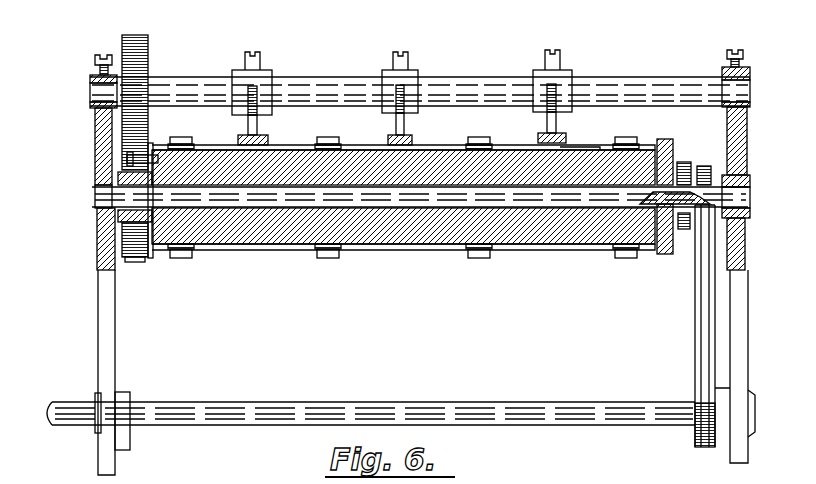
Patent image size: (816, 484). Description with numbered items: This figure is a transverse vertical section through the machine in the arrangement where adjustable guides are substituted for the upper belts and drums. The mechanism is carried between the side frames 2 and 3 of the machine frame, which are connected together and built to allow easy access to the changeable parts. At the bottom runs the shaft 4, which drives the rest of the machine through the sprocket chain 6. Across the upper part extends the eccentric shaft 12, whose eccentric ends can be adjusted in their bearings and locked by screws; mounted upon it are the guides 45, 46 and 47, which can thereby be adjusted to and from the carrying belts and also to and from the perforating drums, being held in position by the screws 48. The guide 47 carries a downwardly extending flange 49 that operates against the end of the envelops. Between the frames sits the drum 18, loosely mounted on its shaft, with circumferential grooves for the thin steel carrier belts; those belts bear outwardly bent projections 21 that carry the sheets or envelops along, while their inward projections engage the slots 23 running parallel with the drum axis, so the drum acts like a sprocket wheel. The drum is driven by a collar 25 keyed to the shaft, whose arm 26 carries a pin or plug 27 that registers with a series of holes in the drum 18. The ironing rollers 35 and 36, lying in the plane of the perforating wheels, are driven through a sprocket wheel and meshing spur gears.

The side frame 2 is at (738, 315).
The side frame 3 is at (100, 295).
The shaft 4 is at (416, 402).
The sprocket chain 6 is at (708, 328).
The eccentric shaft 12 is at (638, 90).
The drum 18 is at (417, 240).
The projections 21 is at (325, 137).
The slots 23 is at (283, 147).
The collar 25 is at (140, 262).
The arm 26 is at (150, 150).
The pin or plug 27 is at (127, 157).
The ironing roller 35 is at (150, 262).
The ironing roller 36 is at (140, 36).
The guide 45 is at (250, 120).
The guide 46 is at (396, 124).
The guide 47 is at (547, 124).
The screws 48 is at (562, 52).
The flange 49 is at (565, 146).